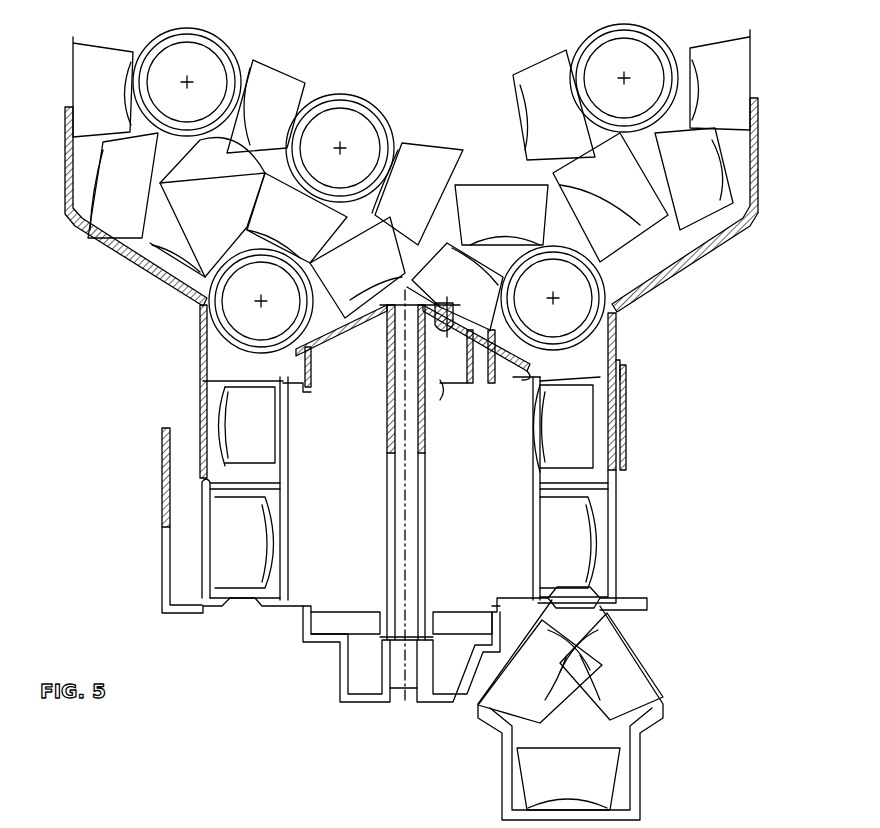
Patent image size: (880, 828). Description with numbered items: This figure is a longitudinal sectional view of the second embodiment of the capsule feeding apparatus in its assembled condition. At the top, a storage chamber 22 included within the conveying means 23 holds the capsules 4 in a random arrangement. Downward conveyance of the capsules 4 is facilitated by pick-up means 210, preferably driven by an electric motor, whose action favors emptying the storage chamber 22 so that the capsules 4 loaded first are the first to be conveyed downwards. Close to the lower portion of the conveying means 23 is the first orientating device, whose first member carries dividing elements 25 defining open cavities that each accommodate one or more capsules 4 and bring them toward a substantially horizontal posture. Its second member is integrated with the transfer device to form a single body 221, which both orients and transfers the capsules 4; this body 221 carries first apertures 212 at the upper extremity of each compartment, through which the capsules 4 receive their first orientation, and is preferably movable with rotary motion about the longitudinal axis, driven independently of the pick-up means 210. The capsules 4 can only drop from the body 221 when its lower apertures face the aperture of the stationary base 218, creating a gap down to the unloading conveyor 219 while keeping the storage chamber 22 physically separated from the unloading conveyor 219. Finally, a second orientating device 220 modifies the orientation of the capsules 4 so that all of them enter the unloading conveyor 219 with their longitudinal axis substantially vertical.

The storage chamber 22 is at (483, 125).
The conveying means 23 is at (107, 250).
The capsule 4 is at (647, 222).
The dividing element 25 is at (193, 373).
The first aperture 212 is at (227, 485).
The pick-up means 210 is at (332, 335).
The single body 221 is at (617, 525).
The stationary base 218 is at (615, 607).
The second orientating device 220 is at (610, 615).
The unloading conveyor 219 is at (640, 788).